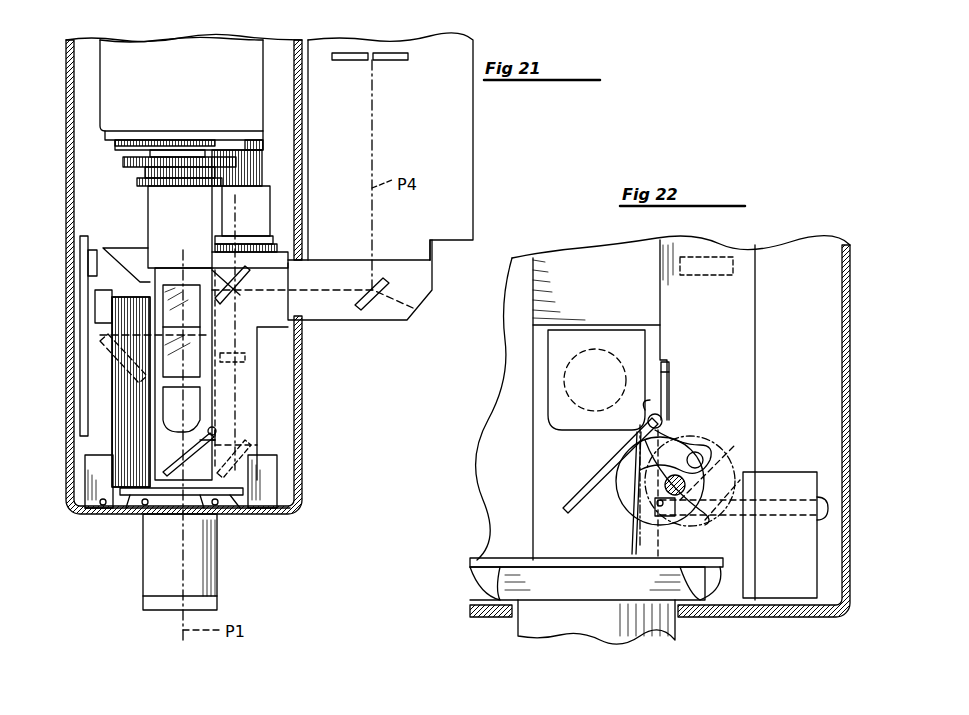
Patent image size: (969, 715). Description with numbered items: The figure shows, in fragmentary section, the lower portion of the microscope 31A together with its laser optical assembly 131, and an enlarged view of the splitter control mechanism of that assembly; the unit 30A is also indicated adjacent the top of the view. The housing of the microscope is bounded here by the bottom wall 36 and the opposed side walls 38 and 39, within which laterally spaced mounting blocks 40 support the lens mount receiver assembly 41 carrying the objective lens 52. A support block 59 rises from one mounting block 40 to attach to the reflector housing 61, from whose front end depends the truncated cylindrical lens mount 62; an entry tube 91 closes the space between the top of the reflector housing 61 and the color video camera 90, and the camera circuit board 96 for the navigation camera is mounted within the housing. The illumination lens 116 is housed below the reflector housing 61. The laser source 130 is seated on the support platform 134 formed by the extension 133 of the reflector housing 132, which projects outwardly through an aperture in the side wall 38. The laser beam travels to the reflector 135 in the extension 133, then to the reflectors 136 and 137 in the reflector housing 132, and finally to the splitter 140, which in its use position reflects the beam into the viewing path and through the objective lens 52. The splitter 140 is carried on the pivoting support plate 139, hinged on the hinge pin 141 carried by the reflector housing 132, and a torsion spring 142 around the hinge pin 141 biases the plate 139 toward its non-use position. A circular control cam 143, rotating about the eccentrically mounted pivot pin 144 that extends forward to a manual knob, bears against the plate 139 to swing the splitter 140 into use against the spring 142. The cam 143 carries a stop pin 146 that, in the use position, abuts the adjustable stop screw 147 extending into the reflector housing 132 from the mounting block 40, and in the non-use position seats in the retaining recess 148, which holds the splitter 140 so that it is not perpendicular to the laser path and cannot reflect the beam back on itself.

In FIG. 21, the microscope 31A is at (62, 58).
In FIG. 21, the color video camera 90 is at (148, 47).
In FIG. 21, the optical unit 30A is at (350, 26).
In FIG. 21, the entry tube 91 is at (152, 205).
In FIG. 21, the reflector 136 is at (236, 268).
In FIG. 21, the side wall 39 is at (72, 330).
In FIG. 21, the camera circuit board 96 is at (85, 362).
In FIG. 21, the support block 59 is at (112, 440).
In FIG. 21, the splitter 140 is at (170, 458).
In FIG. 21, the pivoting support plate 139 is at (178, 460).
In FIG. 22, the pivoting support plate 139 is at (572, 495).
In FIG. 21, the side wall 38 is at (305, 478).
In FIG. 21, the mounting block 40 is at (92, 488).
In FIG. 22, the mounting block 40 is at (770, 585).
In FIG. 21, the objective lens 52 is at (147, 570).
In FIG. 21, the reflector housing 132 is at (257, 402).
In FIG. 22, the reflector housing 132 is at (746, 325).
In FIG. 21, the reflector 137 is at (262, 447).
In FIG. 21, the laser source 130 is at (462, 148).
In FIG. 21, the extension 133 is at (368, 320).
In FIG. 21, the support platform 134 is at (435, 256).
In FIG. 21, the reflector 135 is at (410, 306).
In FIG. 21, the laser optical assembly 131 is at (326, 348).
In FIG. 22, the reflector housing 61 is at (580, 255).
In FIG. 22, the lens mount 62 is at (546, 362).
In FIG. 22, the lens 116 is at (548, 390).
In FIG. 22, the torsion spring 142 is at (666, 366).
In FIG. 22, the hinge pin 141 is at (668, 396).
In FIG. 22, the control cam 143 is at (630, 492).
In FIG. 22, the pivot pin 144 is at (690, 515).
In FIG. 22, the stop pin 146 is at (694, 440).
In FIG. 22, the retaining recess 148 is at (700, 452).
In FIG. 22, the stop screw 147 is at (770, 515).
In FIG. 22, the lens mount receiver assembly 41 is at (558, 586).
In FIG. 22, the bottom wall 36 is at (690, 620).